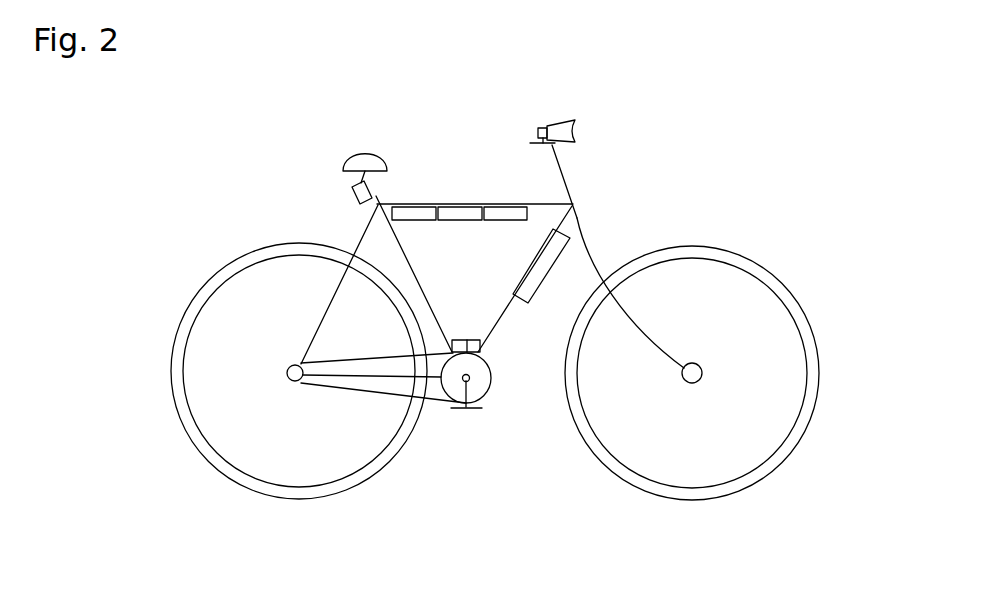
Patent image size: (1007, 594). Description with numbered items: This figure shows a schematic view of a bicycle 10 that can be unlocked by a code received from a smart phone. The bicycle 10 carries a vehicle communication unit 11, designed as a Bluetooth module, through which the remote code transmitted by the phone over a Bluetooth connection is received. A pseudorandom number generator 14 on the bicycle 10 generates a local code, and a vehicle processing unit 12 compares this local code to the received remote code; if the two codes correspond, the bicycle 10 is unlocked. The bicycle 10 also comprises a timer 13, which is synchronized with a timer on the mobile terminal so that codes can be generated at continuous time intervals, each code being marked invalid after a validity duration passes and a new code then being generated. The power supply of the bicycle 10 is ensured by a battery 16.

The bicycle 10 is at (772, 203).
The vehicle communication unit 11 is at (414, 204).
The vehicle processing unit 12 is at (458, 204).
The timer 13 is at (505, 204).
The pseudorandom number generator 14 is at (352, 195).
The battery 16 is at (548, 270).